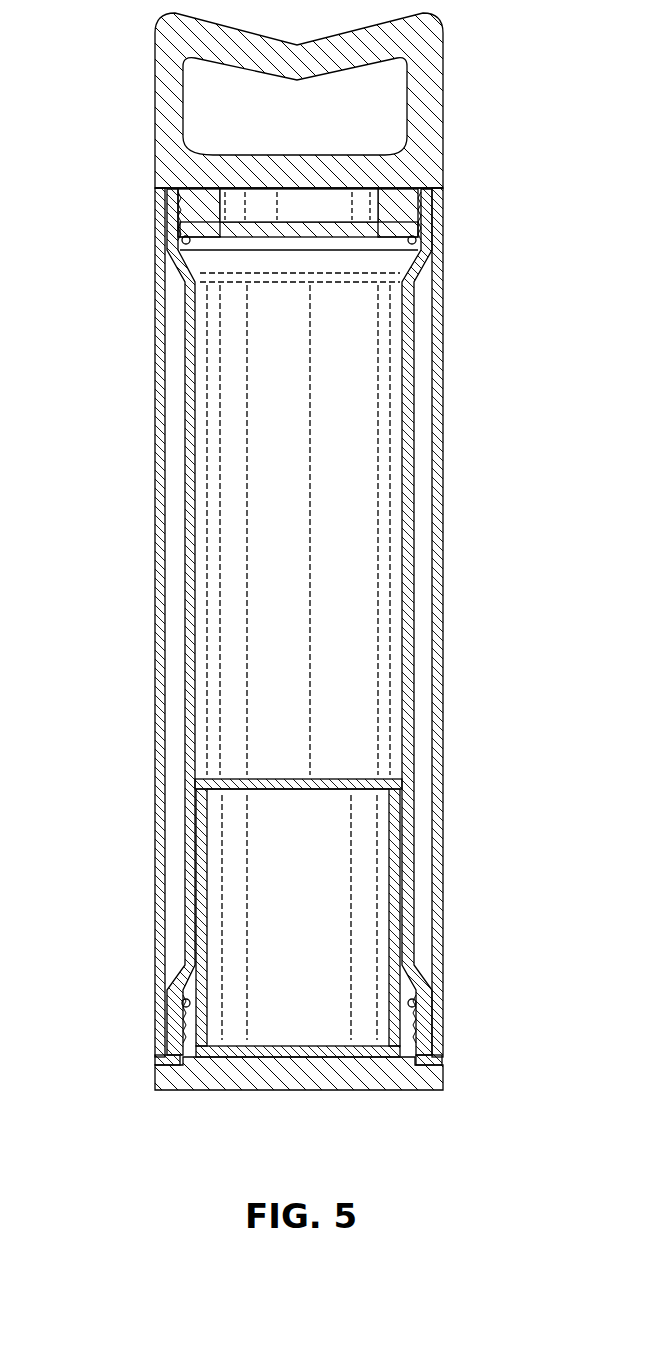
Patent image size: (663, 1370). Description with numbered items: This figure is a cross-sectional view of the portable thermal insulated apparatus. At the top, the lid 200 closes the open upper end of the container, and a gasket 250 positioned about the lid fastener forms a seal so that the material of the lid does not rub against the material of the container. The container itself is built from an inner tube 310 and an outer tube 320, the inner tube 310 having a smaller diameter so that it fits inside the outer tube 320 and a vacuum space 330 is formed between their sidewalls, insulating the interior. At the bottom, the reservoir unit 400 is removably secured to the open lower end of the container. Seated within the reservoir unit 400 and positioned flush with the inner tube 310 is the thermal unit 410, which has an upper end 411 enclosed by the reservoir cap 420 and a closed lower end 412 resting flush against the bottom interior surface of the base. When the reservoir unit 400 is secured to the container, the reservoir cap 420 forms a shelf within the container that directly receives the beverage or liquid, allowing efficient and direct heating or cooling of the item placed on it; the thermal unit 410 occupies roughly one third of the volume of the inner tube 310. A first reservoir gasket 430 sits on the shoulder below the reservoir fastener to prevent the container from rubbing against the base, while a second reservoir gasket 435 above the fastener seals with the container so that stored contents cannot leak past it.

The lid 200 is at (442, 130).
The gasket 250 is at (420, 240).
The inner tube 310 is at (185, 320).
The outer tube 320 is at (442, 318).
The vacuum space 330 is at (418, 448).
The reservoir unit 400 is at (443, 1070).
The thermal unit 410 is at (400, 855).
The upper end 411 is at (373, 779).
The lower end 412 is at (228, 1070).
The reservoir cap 420 is at (342, 779).
The first reservoir gasket 430 is at (155, 1060).
The second reservoir gasket 435 is at (416, 1002).